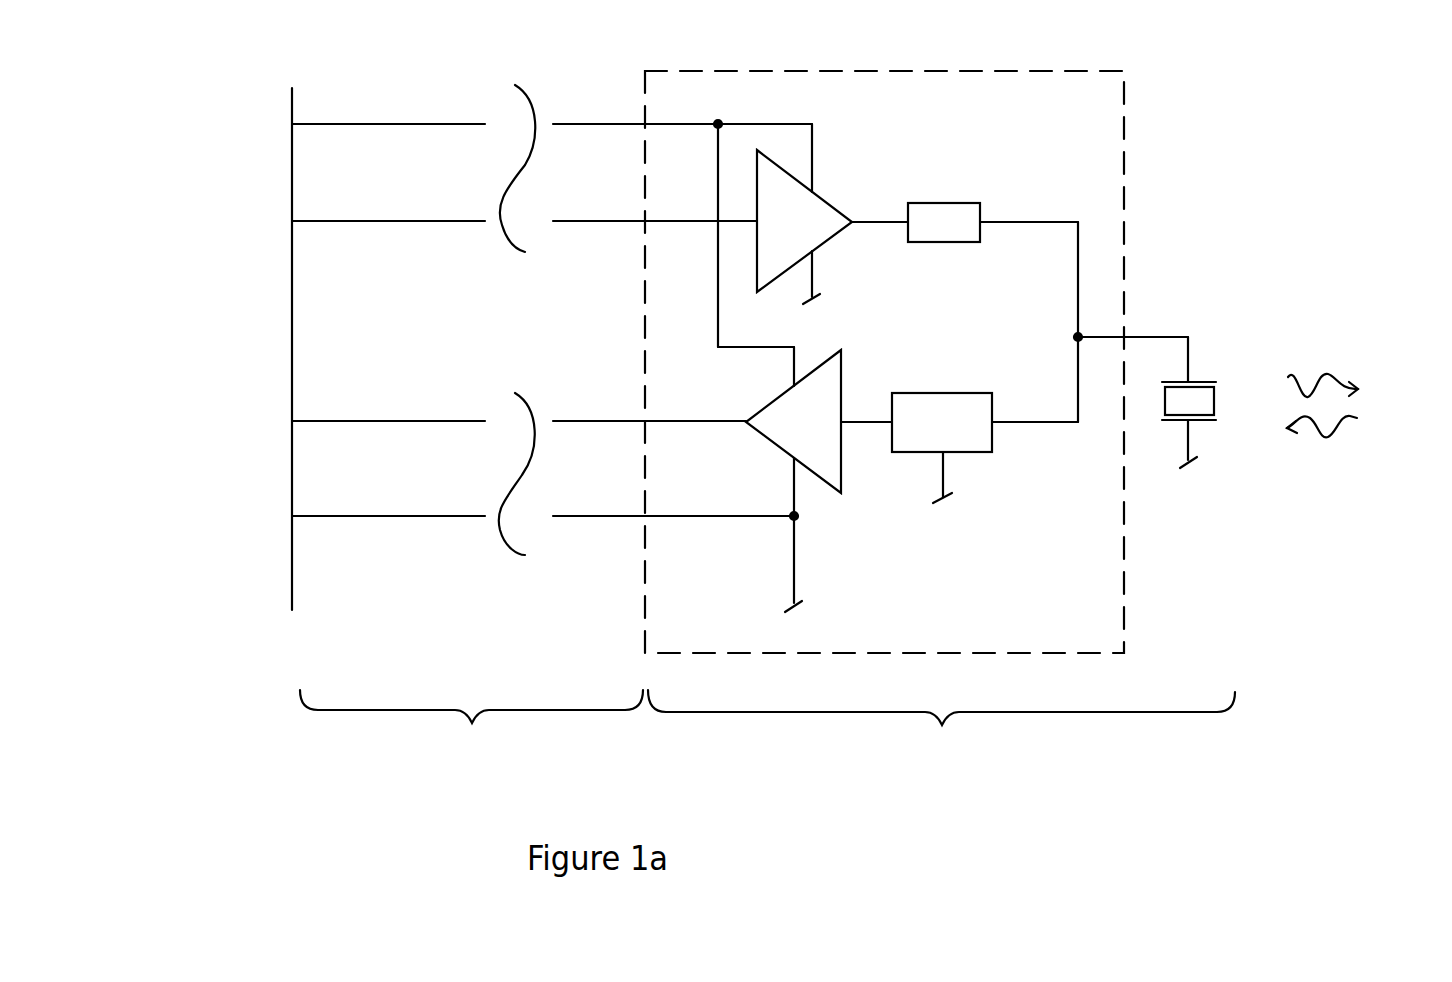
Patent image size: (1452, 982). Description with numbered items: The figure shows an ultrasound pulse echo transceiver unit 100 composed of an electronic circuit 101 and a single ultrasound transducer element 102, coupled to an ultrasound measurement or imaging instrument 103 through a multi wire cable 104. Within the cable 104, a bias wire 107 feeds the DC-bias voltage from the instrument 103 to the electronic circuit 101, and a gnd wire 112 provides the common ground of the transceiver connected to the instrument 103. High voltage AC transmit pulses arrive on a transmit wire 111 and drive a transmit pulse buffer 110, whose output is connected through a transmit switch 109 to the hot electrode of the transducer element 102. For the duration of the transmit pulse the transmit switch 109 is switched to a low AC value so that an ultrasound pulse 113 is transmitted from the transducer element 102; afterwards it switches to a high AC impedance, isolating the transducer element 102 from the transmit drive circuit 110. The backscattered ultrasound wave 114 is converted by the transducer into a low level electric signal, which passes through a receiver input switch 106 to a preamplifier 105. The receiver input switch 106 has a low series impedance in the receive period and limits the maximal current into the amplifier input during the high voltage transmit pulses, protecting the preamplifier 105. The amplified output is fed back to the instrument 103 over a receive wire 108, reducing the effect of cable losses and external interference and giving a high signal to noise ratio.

The ultrasound pulse echo transceiver unit 100 is at (941, 738).
The electronic circuit 101 is at (884, 337).
The ultrasound transducer element 102 is at (1289, 363).
The ultrasound measurement or imaging instrument 103 is at (207, 349).
The multi wire cable 104 is at (471, 725).
The preamplifier 105 is at (793, 421).
The receiver input switch 106 is at (942, 448).
The bias wire 107 is at (552, 105).
The receive wire 108 is at (519, 402).
The transmit switch 109 is at (944, 222).
The transmit pulse buffer 110 is at (804, 221).
The transmit wire 111 is at (524, 202).
The gnd wire 112 is at (542, 498).
The ultrasound pulse 113 is at (1367, 384).
The backscattered ultrasound wave 114 is at (1366, 424).